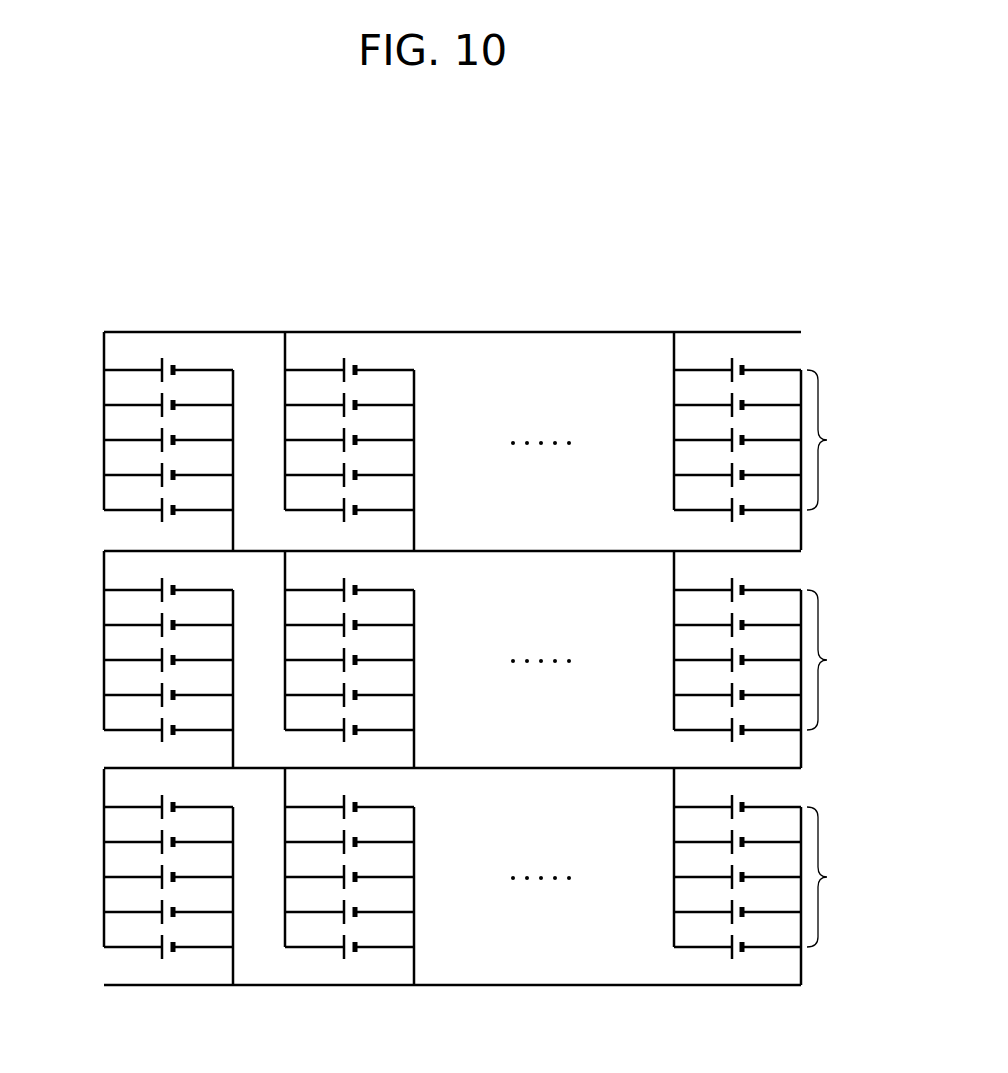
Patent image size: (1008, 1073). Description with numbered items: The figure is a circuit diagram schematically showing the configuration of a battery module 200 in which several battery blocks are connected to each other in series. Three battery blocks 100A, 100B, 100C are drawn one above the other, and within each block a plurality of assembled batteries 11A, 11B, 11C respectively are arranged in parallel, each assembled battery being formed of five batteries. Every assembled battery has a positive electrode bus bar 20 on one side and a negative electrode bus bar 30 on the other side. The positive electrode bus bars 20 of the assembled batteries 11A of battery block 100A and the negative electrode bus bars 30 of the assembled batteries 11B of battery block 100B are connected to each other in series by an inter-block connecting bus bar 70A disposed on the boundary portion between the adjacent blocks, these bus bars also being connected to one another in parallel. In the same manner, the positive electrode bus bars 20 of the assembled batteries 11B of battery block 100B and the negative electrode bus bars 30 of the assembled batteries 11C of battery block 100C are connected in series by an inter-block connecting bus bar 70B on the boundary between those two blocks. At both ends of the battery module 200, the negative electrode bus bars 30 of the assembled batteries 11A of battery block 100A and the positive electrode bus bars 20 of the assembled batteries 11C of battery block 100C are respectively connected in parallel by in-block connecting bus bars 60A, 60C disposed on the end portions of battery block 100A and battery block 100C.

The battery module 200 is at (784, 160).
The assembled battery 11A is at (199, 338).
The assembled battery 11B is at (134, 568).
The assembled battery 11C is at (170, 977).
The positive electrode bus bar 20 is at (233, 425).
The negative electrode bus bar 30 is at (104, 420).
The in-block connecting bus bar 60A is at (520, 332).
The in-block connecting bus bar 60C is at (520, 985).
The inter-block connecting bus bar 70A is at (140, 551).
The inter-block connecting bus bar 70B is at (140, 769).
The battery block 100A is at (856, 440).
The battery block 100B is at (856, 660).
The battery block 100C is at (856, 877).